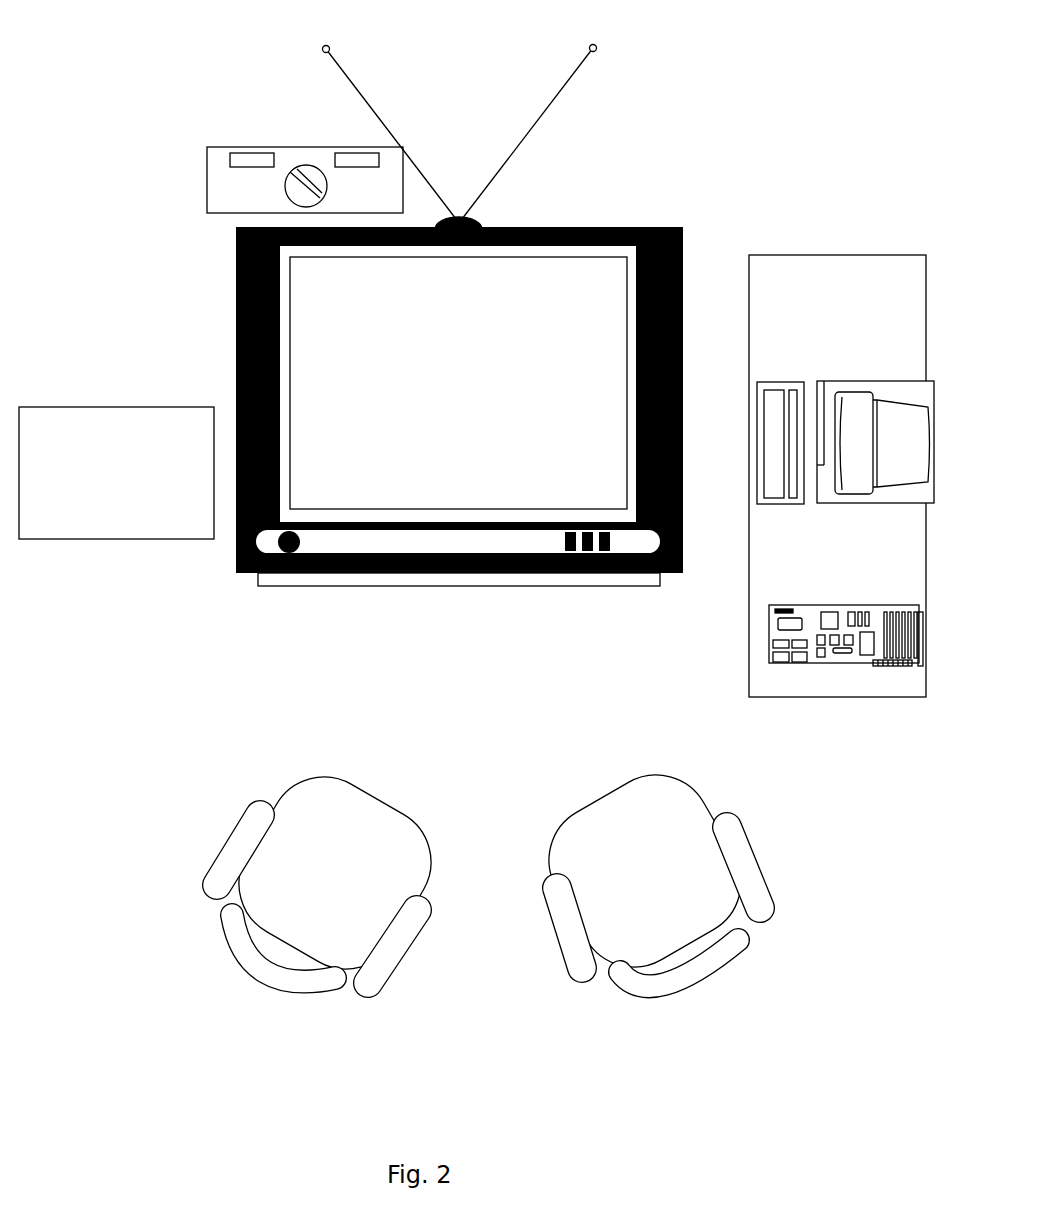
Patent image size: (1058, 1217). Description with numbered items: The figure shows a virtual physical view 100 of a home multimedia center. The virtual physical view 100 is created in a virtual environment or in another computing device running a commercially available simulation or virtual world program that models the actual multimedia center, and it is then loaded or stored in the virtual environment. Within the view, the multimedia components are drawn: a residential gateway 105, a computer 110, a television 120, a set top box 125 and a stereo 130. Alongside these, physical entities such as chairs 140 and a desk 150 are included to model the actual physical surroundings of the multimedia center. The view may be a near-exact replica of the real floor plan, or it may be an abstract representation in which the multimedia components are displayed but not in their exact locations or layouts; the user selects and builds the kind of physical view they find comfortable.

The virtual physical view 100 is at (138, 83).
The residential gateway 105 is at (770, 639).
The computer 110 is at (832, 380).
The television 120 is at (312, 586).
The set top box 125 is at (306, 147).
The stereo 130 is at (117, 407).
The chairs 140 is at (333, 777).
The desk 150 is at (846, 254).